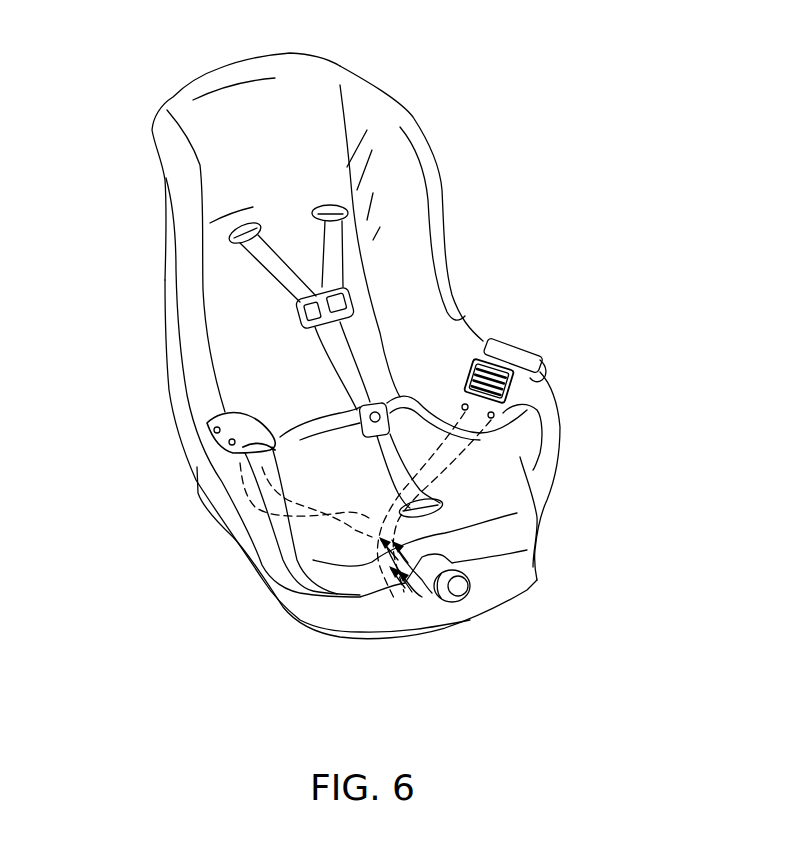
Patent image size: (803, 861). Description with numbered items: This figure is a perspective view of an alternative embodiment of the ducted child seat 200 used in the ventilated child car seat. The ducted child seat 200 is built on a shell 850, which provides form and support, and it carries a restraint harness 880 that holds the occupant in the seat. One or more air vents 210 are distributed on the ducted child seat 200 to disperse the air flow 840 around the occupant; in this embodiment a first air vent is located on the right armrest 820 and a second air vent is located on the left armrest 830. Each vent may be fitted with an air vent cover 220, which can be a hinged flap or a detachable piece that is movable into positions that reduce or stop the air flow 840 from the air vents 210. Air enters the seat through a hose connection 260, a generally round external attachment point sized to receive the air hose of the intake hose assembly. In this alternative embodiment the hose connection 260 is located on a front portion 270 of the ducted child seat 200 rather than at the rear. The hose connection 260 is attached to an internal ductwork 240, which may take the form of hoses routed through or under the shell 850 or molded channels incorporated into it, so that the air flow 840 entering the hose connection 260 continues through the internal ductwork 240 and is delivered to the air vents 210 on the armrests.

The ducted child seat 200 is at (383, 97).
The restraint harness 880 is at (340, 253).
The air vent covers 220 is at (470, 348).
The left armrest 830 is at (540, 382).
The air vents 210 is at (295, 455).
The front portion 270 is at (587, 480).
The shell 850 is at (537, 580).
The right armrest 820 is at (267, 460).
The internal ductwork 240 is at (367, 538).
The air flow 840 is at (420, 600).
The hose connection 260 is at (467, 600).